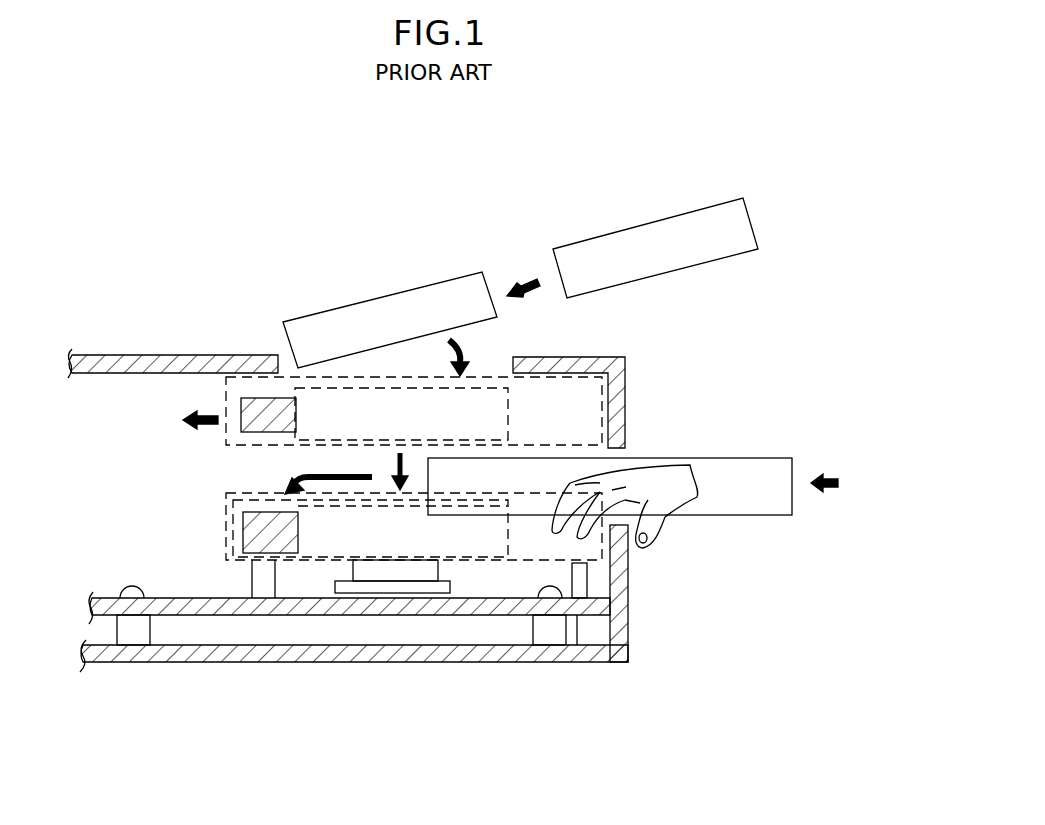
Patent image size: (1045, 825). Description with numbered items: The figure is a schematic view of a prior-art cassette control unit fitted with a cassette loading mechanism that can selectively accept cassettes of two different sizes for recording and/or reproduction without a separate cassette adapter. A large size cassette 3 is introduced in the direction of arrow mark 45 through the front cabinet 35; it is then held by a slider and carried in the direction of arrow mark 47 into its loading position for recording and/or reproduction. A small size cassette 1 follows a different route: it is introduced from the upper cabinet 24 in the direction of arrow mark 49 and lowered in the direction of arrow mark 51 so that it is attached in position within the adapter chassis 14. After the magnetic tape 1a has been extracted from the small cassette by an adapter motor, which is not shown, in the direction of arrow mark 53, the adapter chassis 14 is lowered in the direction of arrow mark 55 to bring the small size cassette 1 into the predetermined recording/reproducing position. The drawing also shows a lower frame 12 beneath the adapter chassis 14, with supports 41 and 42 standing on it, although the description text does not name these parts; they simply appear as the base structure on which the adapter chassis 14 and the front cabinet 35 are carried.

The small size cassette 1 is at (643, 233).
The magnetic tape 1a is at (262, 534).
The large size cassette 3 is at (750, 505).
The base frame 12 is at (108, 598).
The adapter chassis 14 is at (227, 561).
The upper cabinet 24 is at (148, 355).
The front cabinet 35 is at (625, 392).
The support pins 41 is at (263, 598).
The support post 42 is at (581, 590).
The arrow mark 45 is at (833, 480).
The arrow mark 47 is at (302, 473).
The arrow mark 49 is at (537, 280).
The arrow mark 51 is at (466, 352).
The arrow mark 53 is at (192, 426).
The arrow mark 55 is at (412, 466).